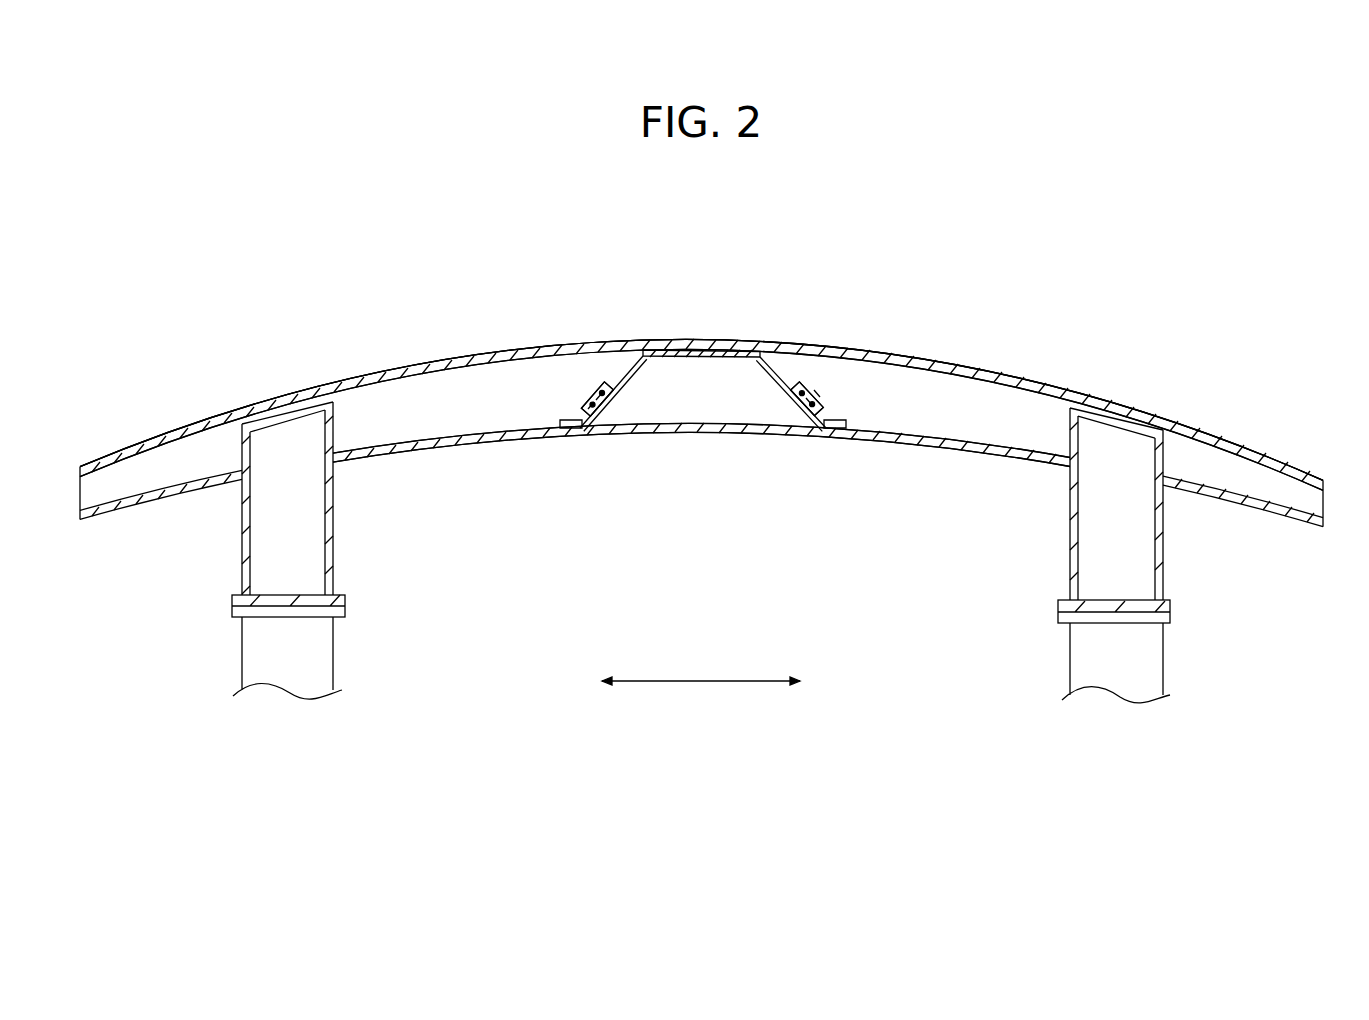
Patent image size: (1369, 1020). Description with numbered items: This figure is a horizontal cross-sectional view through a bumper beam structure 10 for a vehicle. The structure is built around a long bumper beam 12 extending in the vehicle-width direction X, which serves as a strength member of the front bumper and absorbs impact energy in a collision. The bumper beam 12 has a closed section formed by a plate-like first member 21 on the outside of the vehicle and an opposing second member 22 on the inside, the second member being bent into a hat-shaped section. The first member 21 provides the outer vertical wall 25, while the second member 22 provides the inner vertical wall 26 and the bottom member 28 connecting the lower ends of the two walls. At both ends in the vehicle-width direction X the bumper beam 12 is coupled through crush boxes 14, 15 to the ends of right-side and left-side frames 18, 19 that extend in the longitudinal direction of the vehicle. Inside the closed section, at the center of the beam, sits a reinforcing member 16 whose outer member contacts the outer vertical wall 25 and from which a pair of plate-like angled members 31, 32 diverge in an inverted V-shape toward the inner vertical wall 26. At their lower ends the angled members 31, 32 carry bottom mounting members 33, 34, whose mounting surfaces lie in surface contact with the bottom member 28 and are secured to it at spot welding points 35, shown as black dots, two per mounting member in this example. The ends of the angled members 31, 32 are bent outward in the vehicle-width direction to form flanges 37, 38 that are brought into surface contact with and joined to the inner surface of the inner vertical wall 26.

The bumper beam structure 10 is at (1180, 348).
The bumper beam 12 is at (1017, 370).
The crush box 14 is at (1130, 540).
The crush box 15 is at (258, 525).
The reinforcing member 16 is at (703, 399).
The side frame 18 is at (1130, 653).
The side frame 19 is at (322, 653).
The first member 21 is at (368, 375).
The second member 22 is at (420, 452).
The outer vertical wall 25 is at (957, 363).
The inner vertical wall 26 is at (957, 450).
The bottom member 28 is at (987, 432).
The angled member 31 is at (775, 398).
The angled member 32 is at (628, 398).
The bottom mounting member 33 is at (808, 390).
The bottom mounting member 34 is at (588, 402).
The spot welding point 35 is at (678, 362).
The flange 37 is at (857, 425).
The flange 38 is at (545, 428).
The vehicle-width direction X is at (708, 683).